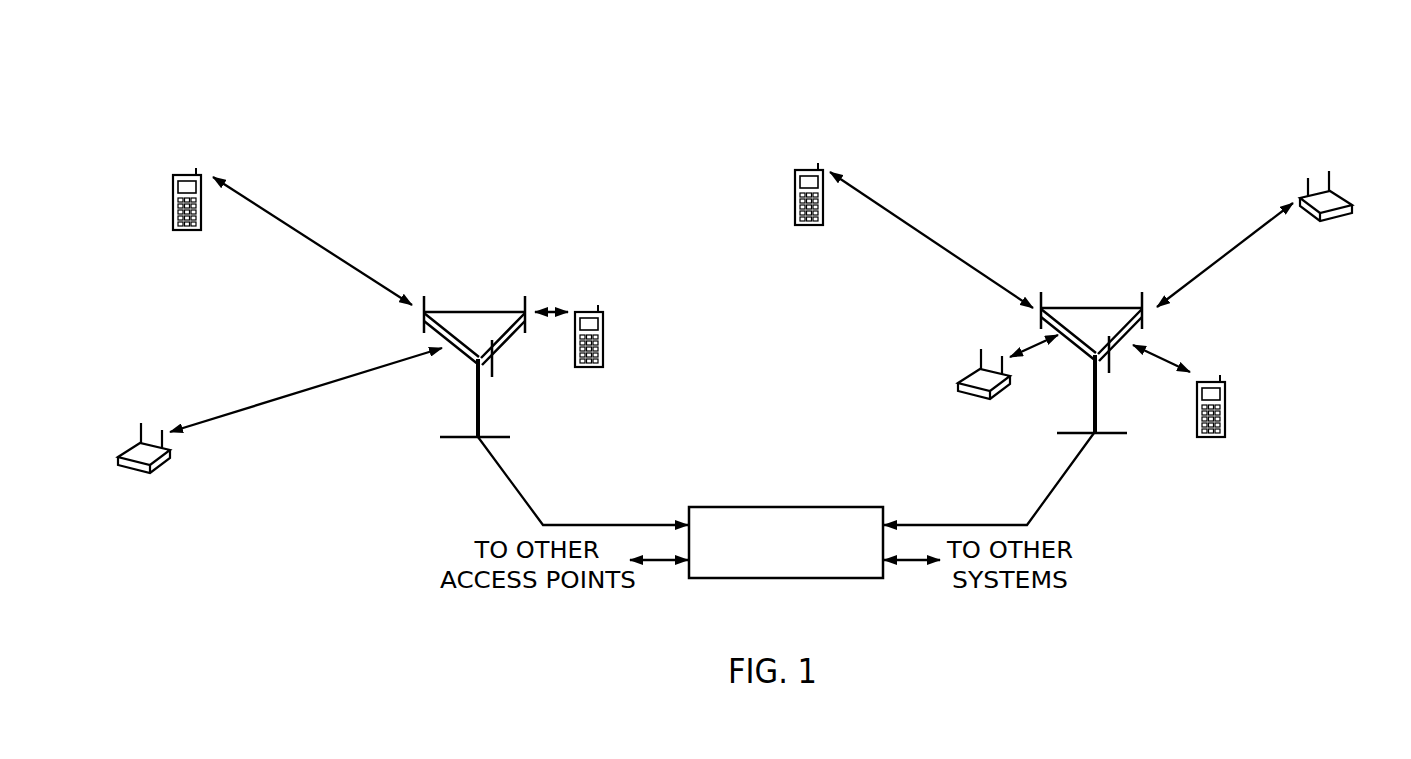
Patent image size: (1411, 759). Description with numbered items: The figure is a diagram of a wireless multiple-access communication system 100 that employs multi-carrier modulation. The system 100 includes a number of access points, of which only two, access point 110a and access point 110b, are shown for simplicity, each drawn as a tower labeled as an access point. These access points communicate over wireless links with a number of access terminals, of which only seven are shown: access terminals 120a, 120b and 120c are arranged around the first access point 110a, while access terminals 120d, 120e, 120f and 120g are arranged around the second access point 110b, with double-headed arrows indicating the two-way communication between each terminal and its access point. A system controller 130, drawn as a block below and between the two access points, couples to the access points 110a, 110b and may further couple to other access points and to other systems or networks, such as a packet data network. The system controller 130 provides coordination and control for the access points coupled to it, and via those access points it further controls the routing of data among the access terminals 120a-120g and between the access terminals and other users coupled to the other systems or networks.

The wireless multiple-access communication system 100 is at (1232, 78).
The access point 110a is at (480, 296).
The access point 110b is at (1087, 305).
The access terminal 120a is at (131, 443).
The access terminal 120b is at (193, 174).
The access terminal 120c is at (598, 301).
The access terminal 120d is at (809, 169).
The access terminal 120e is at (971, 368).
The access terminal 120f is at (1223, 363).
The access terminal 120g is at (1352, 176).
The system controller 130 is at (817, 507).